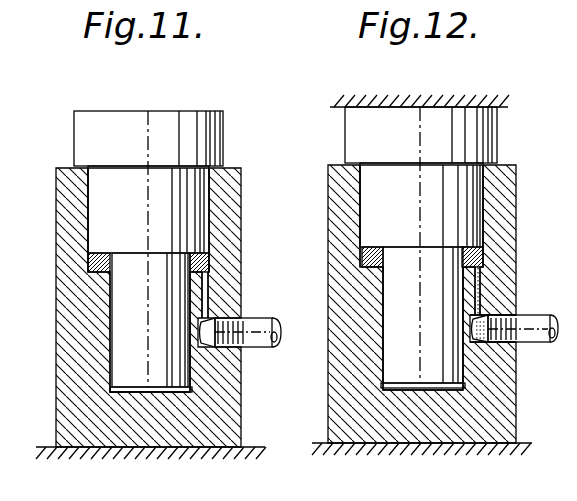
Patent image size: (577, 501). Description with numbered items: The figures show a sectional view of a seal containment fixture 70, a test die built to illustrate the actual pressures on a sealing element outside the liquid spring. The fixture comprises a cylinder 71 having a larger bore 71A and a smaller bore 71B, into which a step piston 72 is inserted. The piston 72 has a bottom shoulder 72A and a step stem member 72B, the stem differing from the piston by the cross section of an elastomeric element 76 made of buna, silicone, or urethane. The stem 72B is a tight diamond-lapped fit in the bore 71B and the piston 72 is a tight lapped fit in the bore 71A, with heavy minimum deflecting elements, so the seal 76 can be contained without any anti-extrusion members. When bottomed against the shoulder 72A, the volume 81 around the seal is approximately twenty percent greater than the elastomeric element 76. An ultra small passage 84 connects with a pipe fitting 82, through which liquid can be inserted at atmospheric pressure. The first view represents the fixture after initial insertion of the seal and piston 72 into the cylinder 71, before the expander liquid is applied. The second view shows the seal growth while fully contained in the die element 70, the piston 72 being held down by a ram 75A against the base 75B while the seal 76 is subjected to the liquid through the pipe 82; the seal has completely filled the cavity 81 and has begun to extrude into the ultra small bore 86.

In FIG. 11, the seal containment fixture 70 is at (237, 164).
In FIG. 12, the seal containment fixture 70 is at (509, 160).
In FIG. 11, the cylinder 71 is at (135, 307).
In FIG. 12, the cylinder 71 is at (403, 304).
In FIG. 11, the bore 71A is at (88, 193).
In FIG. 12, the bore 71A is at (361, 205).
In FIG. 11, the bore 71B is at (112, 325).
In FIG. 12, the bore 71B is at (383, 313).
In FIG. 11, the step piston 72 is at (152, 251).
In FIG. 12, the step piston 72 is at (447, 247).
In FIG. 11, the bottom shoulder 72A is at (85, 173).
In FIG. 12, the bottom shoulder 72A is at (375, 167).
In FIG. 11, the step stem member 72B is at (133, 252).
In FIG. 12, the step stem member 72B is at (408, 249).
In FIG. 12, the ram 75A is at (435, 96).
In FIG. 11, the base 75B is at (154, 456).
In FIG. 12, the base 75B is at (429, 456).
In FIG. 11, the elastomeric element 76 is at (210, 262).
In FIG. 12, the elastomeric element 76 is at (485, 253).
In FIG. 11, the volume 81 is at (88, 262).
In FIG. 12, the volume 81 is at (362, 257).
In FIG. 11, the pipe fitting 82 is at (278, 329).
In FIG. 12, the pipe fitting 82 is at (556, 310).
In FIG. 12, the passage 84 is at (517, 293).
In FIG. 11, the ultra small bore 86 is at (206, 290).
In FIG. 12, the ultra small bore 86 is at (517, 276).